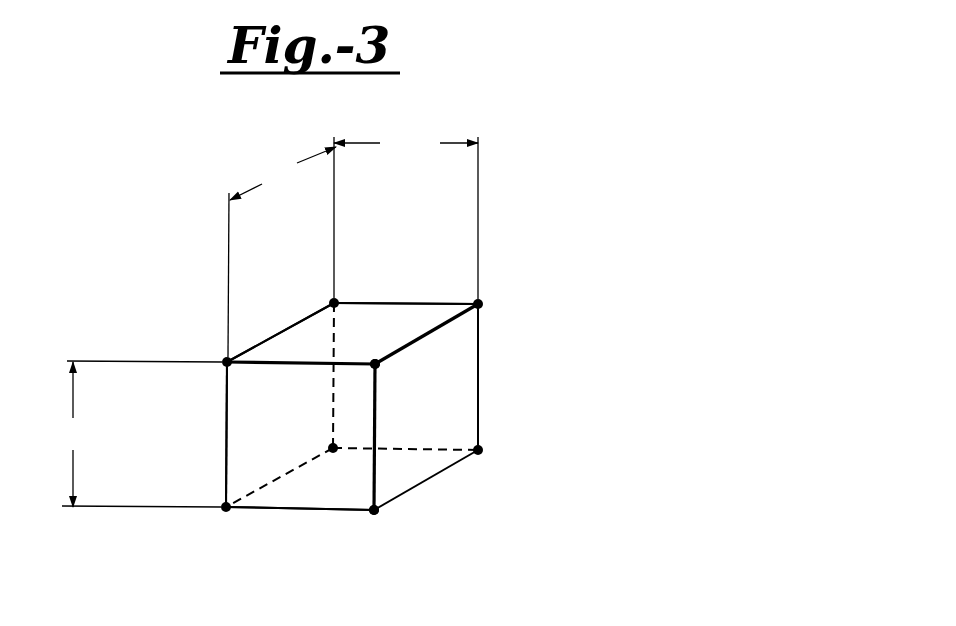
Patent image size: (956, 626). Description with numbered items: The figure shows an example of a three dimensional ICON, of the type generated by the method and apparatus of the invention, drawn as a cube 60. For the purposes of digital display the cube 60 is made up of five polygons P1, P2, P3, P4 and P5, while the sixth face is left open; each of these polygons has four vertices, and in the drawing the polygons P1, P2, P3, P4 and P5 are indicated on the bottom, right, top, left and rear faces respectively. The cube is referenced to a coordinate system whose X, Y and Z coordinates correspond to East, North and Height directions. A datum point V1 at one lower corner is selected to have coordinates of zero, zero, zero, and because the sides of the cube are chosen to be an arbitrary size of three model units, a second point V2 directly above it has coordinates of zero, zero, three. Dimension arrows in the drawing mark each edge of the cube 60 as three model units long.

The cube 60 is at (509, 266).
The polygon P1 is at (318, 478).
The polygon P2 is at (453, 411).
The polygon P3 is at (368, 318).
The polygon P4 is at (275, 430).
The polygon P5 is at (357, 400).
The second point V2 is at (375, 364).
The datum point V1 is at (374, 510).